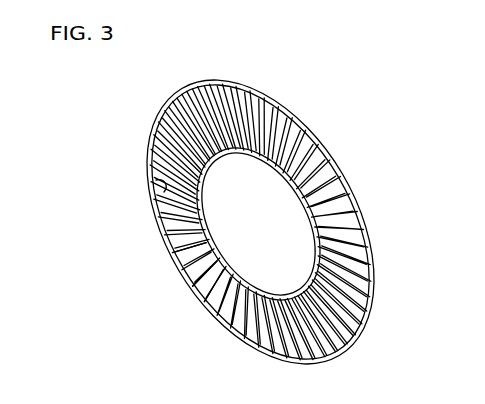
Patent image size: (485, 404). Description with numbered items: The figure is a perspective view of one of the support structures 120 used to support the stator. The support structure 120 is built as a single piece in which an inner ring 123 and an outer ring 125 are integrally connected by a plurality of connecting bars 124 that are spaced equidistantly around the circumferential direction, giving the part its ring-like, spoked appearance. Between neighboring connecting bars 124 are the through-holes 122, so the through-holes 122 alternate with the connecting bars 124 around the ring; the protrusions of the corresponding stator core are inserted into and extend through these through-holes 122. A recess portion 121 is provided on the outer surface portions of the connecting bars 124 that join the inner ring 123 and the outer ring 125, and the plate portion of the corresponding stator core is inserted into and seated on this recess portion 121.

The support structure 120 is at (247, 222).
The recess portion 121 is at (165, 191).
The through-holes 122 is at (213, 287).
The inner ring 123 is at (210, 265).
The connecting bars 124 is at (185, 245).
The outer ring 125 is at (150, 158).